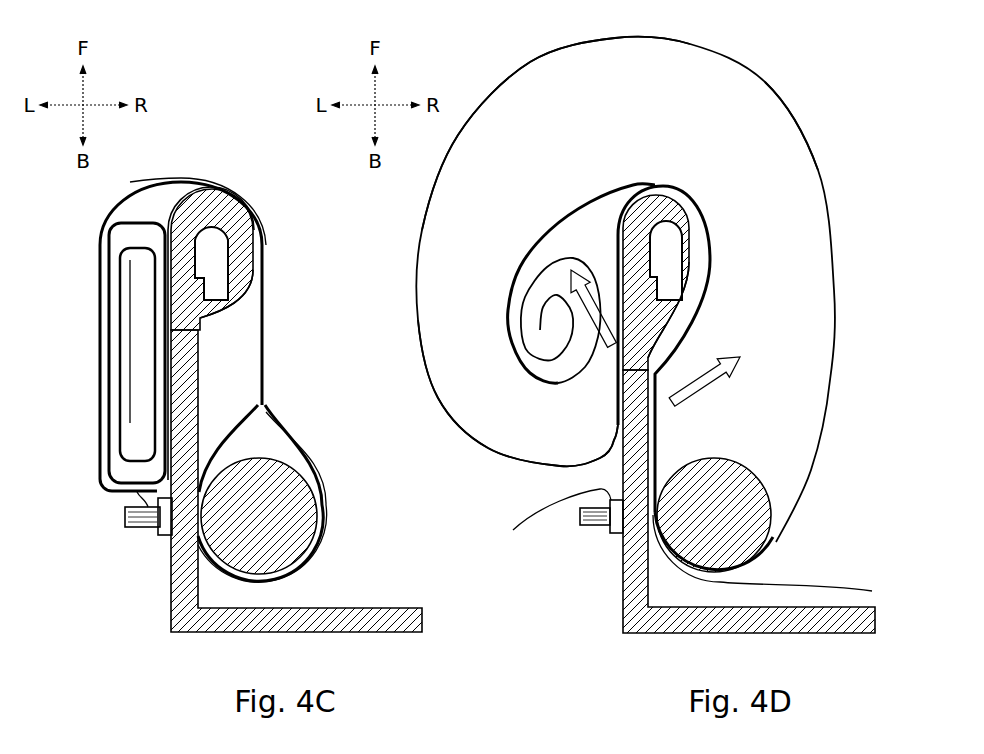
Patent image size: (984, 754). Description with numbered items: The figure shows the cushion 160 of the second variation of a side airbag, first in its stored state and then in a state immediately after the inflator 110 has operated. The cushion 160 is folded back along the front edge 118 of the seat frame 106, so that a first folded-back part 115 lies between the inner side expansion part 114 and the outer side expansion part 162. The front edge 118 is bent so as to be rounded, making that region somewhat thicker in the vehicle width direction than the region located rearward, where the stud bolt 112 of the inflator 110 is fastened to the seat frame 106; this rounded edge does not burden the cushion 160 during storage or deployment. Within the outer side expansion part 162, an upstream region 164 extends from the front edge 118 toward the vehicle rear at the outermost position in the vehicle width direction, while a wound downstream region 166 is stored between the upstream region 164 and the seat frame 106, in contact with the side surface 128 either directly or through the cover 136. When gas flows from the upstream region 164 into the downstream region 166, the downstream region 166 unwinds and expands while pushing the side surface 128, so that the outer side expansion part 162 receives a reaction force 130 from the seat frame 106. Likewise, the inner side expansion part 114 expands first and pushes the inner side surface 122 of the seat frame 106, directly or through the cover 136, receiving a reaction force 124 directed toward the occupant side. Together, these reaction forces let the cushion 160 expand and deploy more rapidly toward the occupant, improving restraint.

In FIG. 4C, the seat frame 106 is at (201, 635).
In FIG. 4D, the seat frame 106 is at (652, 635).
In FIG. 4C, the inflator 110 is at (324, 512).
In FIG. 4D, the inflator 110 is at (774, 514).
In FIG. 4C, the stud bolt 112 is at (147, 529).
In FIG. 4D, the stud bolt 112 is at (598, 528).
In FIG. 4C, the inner side expansion part 114 is at (264, 320).
In FIG. 4D, the inner side expansion part 114 is at (838, 280).
In FIG. 4C, the first folded-back part 115 is at (183, 181).
In FIG. 4D, the first folded-back part 115 is at (720, 48).
In FIG. 4C, the front edge 118 is at (222, 194).
In FIG. 4D, the front edge 118 is at (678, 194).
In FIG. 4C, the side surface 122 is at (200, 375).
In FIG. 4D, the side surface 122 is at (658, 442).
In FIG. 4D, the reaction force 124 is at (733, 353).
In FIG. 4C, the side surface 128 is at (156, 392).
In FIG. 4D, the side surface 128 is at (616, 478).
In FIG. 4D, the reaction force 130 is at (587, 262).
In FIG. 4C, the cover 136 is at (112, 490).
In FIG. 4D, the cover 136 is at (516, 531).
In FIG. 4C, the cushion 160 is at (318, 470).
In FIG. 4D, the cushion 160 is at (803, 130).
In FIG. 4C, the outer side expansion part 162 is at (102, 325).
In FIG. 4D, the outer side expansion part 162 is at (510, 75).
In FIG. 4C, the upstream region 164 is at (102, 443).
In FIG. 4D, the upstream region 164 is at (466, 417).
In FIG. 4C, the downstream region 166 is at (124, 206).
In FIG. 4D, the downstream region 166 is at (558, 232).